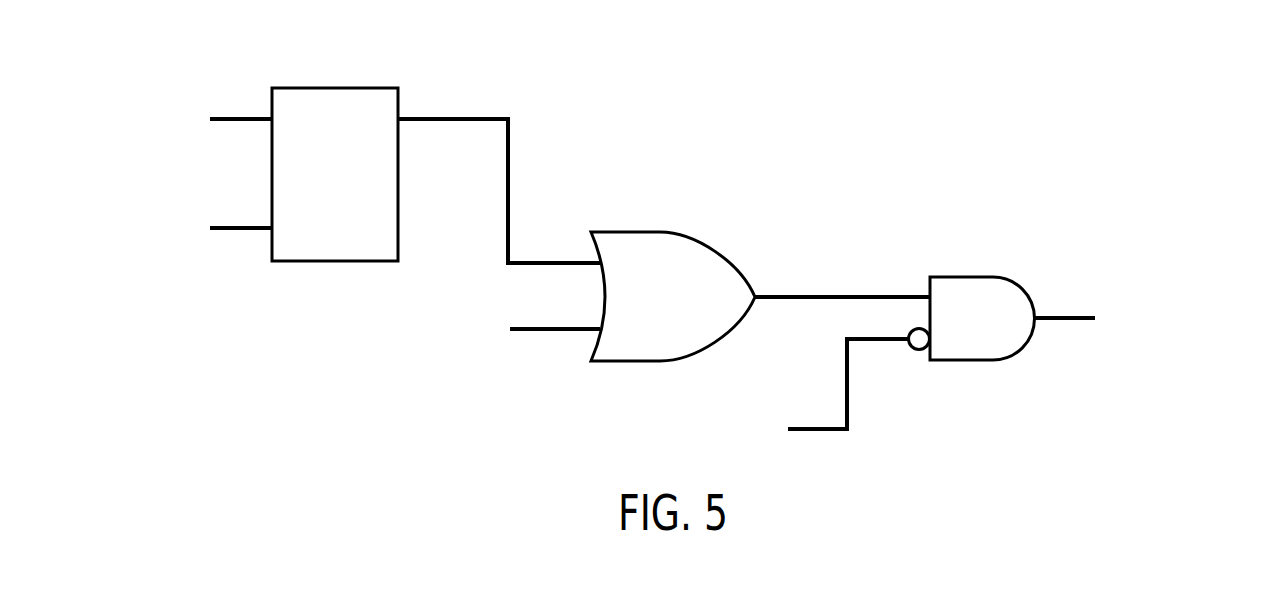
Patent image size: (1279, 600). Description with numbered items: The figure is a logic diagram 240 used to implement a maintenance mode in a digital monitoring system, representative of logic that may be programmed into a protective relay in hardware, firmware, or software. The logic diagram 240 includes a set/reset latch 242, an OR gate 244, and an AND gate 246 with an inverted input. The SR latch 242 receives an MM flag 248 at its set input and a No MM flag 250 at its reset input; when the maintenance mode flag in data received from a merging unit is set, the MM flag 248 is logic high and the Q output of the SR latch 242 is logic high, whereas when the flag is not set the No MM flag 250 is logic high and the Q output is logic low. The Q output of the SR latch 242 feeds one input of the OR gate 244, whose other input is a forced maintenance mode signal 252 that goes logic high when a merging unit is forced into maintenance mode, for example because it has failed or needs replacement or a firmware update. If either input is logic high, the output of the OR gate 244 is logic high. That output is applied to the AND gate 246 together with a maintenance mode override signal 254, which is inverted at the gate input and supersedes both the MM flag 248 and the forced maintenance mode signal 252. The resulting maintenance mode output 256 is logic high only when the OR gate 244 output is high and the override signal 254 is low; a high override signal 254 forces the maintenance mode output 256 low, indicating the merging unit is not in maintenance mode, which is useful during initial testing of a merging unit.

The logic diagram 240 is at (862, 108).
The set/reset (SR) latch 242 is at (327, 88).
The OR gate 244 is at (652, 231).
The AND gate 246 is at (970, 277).
The MM flag 248 is at (173, 83).
The No MM flag 250 is at (127, 195).
The forced maintenance mode signal 252 is at (445, 337).
The maintenance mode override signal 254 is at (727, 402).
The maintenance mode output 256 is at (1170, 292).